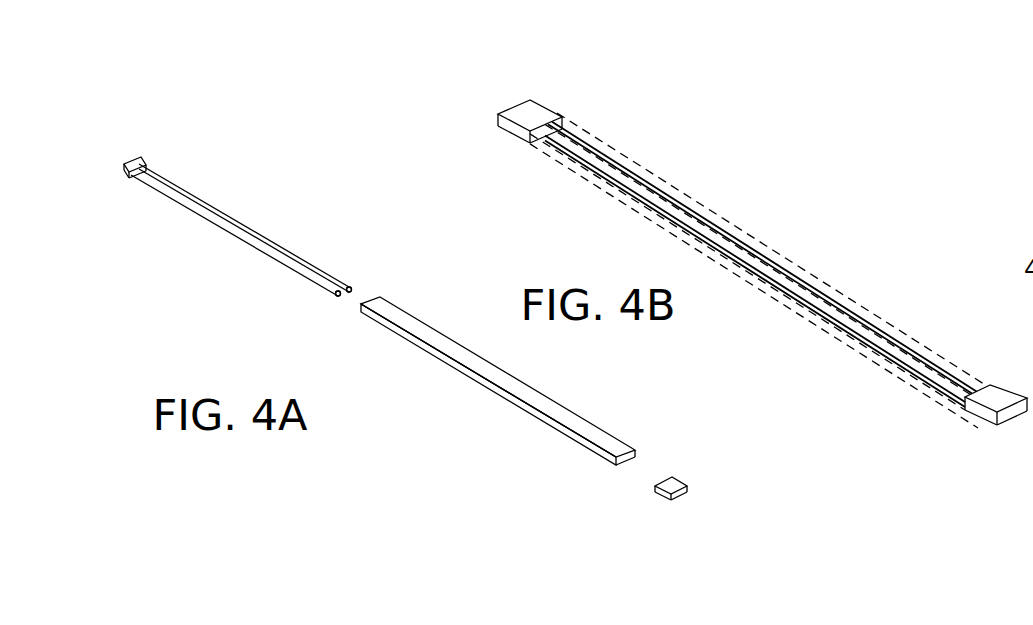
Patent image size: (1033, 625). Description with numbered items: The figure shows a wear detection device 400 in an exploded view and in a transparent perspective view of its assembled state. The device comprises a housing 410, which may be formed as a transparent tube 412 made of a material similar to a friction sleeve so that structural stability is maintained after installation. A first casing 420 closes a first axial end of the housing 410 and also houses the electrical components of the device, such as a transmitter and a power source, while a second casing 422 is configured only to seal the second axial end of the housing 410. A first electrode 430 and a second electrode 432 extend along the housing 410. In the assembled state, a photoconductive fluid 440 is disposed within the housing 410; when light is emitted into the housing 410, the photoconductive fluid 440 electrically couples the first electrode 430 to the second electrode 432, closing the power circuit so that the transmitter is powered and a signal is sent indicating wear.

In FIG. 4A, the wear detection device 400 is at (112, 130).
In FIG. 4B, the wear detection device 400 is at (444, 128).
In FIG. 4A, the housing 410 is at (484, 368).
In FIG. 4A, the transparent tube 412 is at (562, 423).
In FIG. 4A, the first casing 420 is at (134, 173).
In FIG. 4B, the first casing 420 is at (530, 121).
In FIG. 4A, the second casing 422 is at (668, 493).
In FIG. 4B, the second casing 422 is at (996, 405).
In FIG. 4A, the first electrode 430 is at (253, 247).
In FIG. 4B, the first electrode 430 is at (761, 264).
In FIG. 4A, the second electrode 432 is at (332, 275).
In FIG. 4B, the photoconductive fluid 440 is at (828, 318).